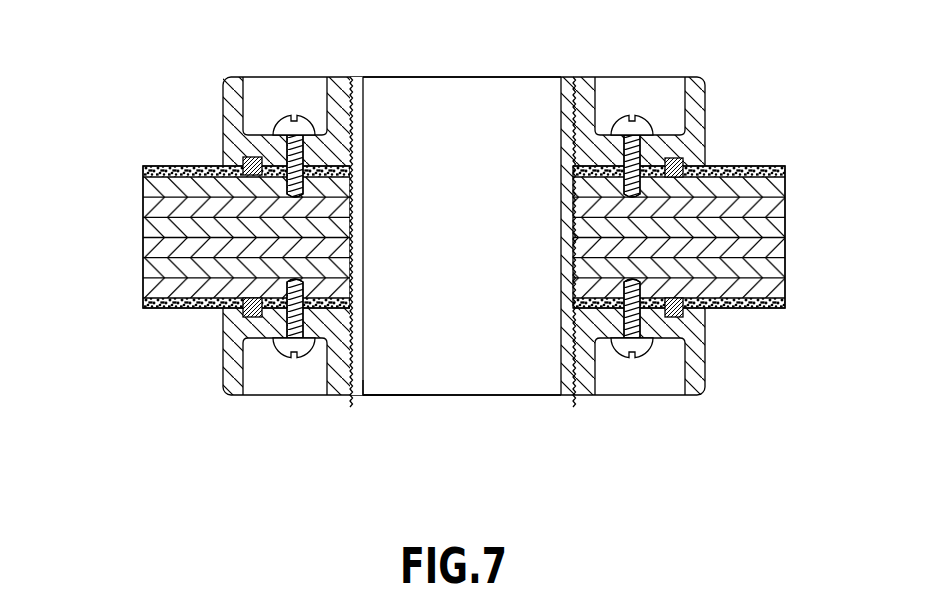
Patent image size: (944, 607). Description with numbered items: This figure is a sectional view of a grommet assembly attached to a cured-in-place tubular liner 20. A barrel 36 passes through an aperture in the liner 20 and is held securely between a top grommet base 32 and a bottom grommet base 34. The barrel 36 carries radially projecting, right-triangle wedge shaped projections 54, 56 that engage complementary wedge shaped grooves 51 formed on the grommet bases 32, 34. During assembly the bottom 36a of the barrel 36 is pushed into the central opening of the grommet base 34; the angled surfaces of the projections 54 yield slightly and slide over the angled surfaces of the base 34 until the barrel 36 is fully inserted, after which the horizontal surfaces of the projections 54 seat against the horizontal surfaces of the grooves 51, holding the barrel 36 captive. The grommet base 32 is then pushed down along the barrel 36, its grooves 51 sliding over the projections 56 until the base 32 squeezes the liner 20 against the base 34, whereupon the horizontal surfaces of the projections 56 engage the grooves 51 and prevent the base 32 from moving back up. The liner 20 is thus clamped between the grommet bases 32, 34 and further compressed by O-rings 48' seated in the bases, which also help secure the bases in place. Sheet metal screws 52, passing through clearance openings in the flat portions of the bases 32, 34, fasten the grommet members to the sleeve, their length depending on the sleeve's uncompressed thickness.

The liner 20 is at (134, 257).
The grommet base 32 is at (708, 97).
The grommet base 34 is at (714, 363).
The barrel 36 is at (362, 78).
The bottom of barrel 36a is at (565, 397).
The O-rings 48' is at (420, 200).
The grooves 51 is at (352, 318).
The sheet metal screws 52 is at (634, 100).
The wedge shaped projections 54 is at (363, 382).
The wedge shaped projections 56 is at (357, 138).